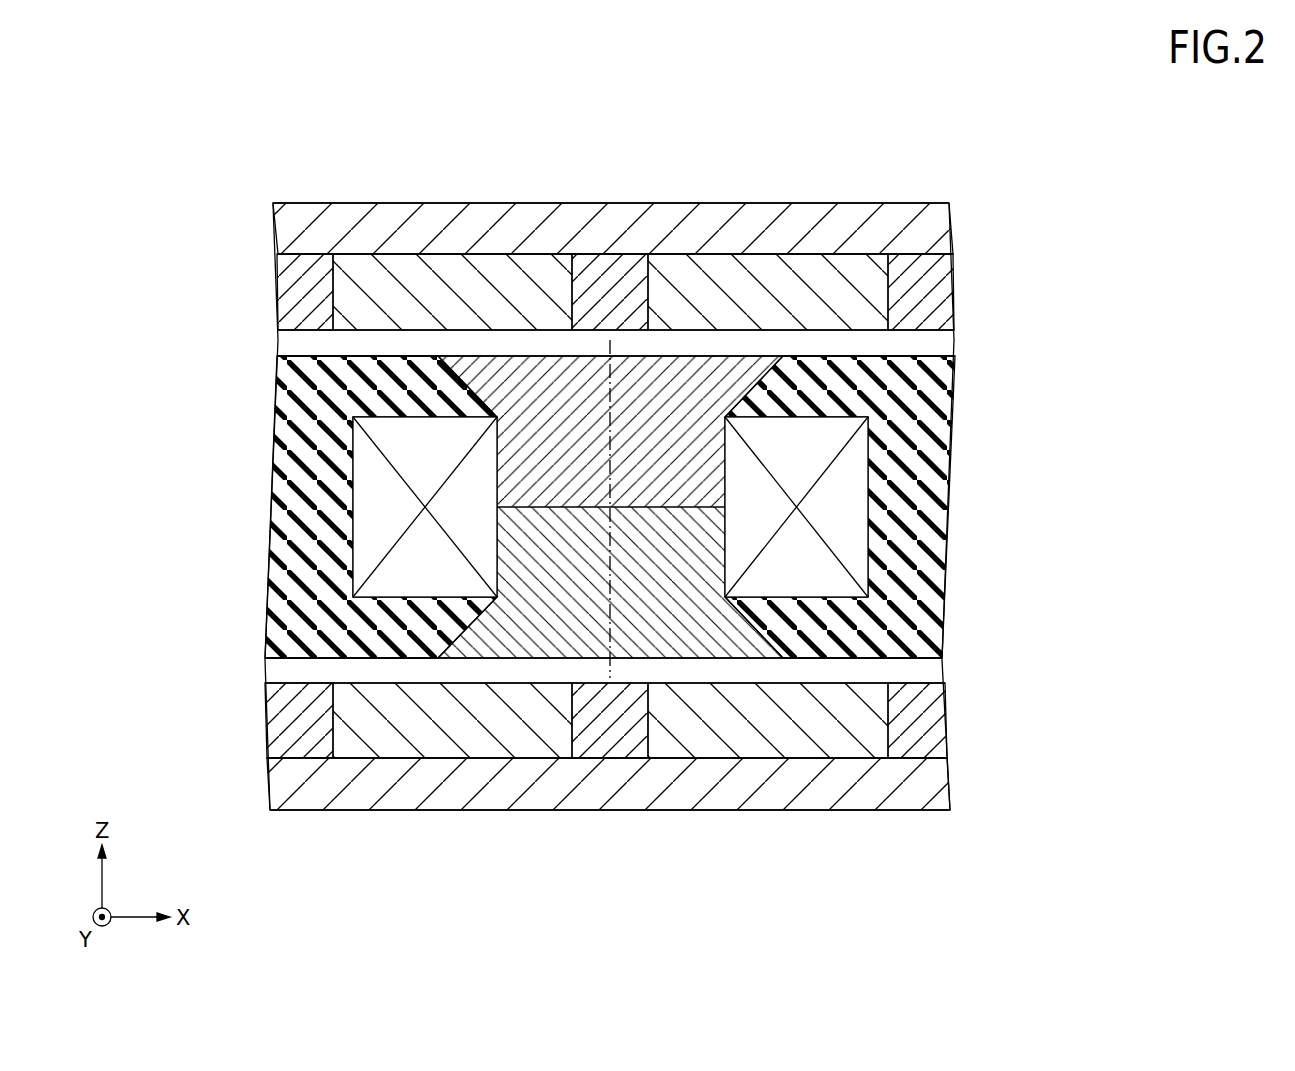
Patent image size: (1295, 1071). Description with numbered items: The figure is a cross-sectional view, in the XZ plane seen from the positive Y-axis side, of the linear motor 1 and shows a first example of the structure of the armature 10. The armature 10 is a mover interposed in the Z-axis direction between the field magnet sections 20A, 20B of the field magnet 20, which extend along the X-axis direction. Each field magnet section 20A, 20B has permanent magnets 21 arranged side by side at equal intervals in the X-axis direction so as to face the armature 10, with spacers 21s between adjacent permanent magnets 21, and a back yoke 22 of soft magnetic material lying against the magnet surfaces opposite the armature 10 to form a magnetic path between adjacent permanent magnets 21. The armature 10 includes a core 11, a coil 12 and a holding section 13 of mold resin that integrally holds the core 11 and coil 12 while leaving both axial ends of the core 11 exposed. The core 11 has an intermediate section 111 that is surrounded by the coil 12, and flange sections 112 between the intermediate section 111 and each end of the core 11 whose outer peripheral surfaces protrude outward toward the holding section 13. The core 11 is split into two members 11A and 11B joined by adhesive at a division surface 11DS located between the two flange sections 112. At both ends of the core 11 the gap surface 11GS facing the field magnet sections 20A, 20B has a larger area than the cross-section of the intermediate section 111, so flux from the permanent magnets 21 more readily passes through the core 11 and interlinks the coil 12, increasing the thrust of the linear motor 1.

The linear motor 1 is at (90, 105).
The armature 10 is at (292, 344).
The core 11 is at (113, 457).
The member 11A is at (517, 468).
The member 11B is at (517, 543).
The division surface 11DS is at (564, 494).
The gap surface 11GS is at (537, 340).
The intermediate section 111 is at (712, 468).
The flange section 112 is at (752, 367).
The coil 12 is at (748, 587).
The holding section 13 is at (410, 638).
The field magnet 20 is at (1137, 305).
The field magnet section 20A is at (977, 274).
The field magnet section 20B is at (977, 746).
The permanent magnet 21 is at (445, 265).
The spacer 21s is at (295, 265).
The back yoke 22 is at (848, 215).